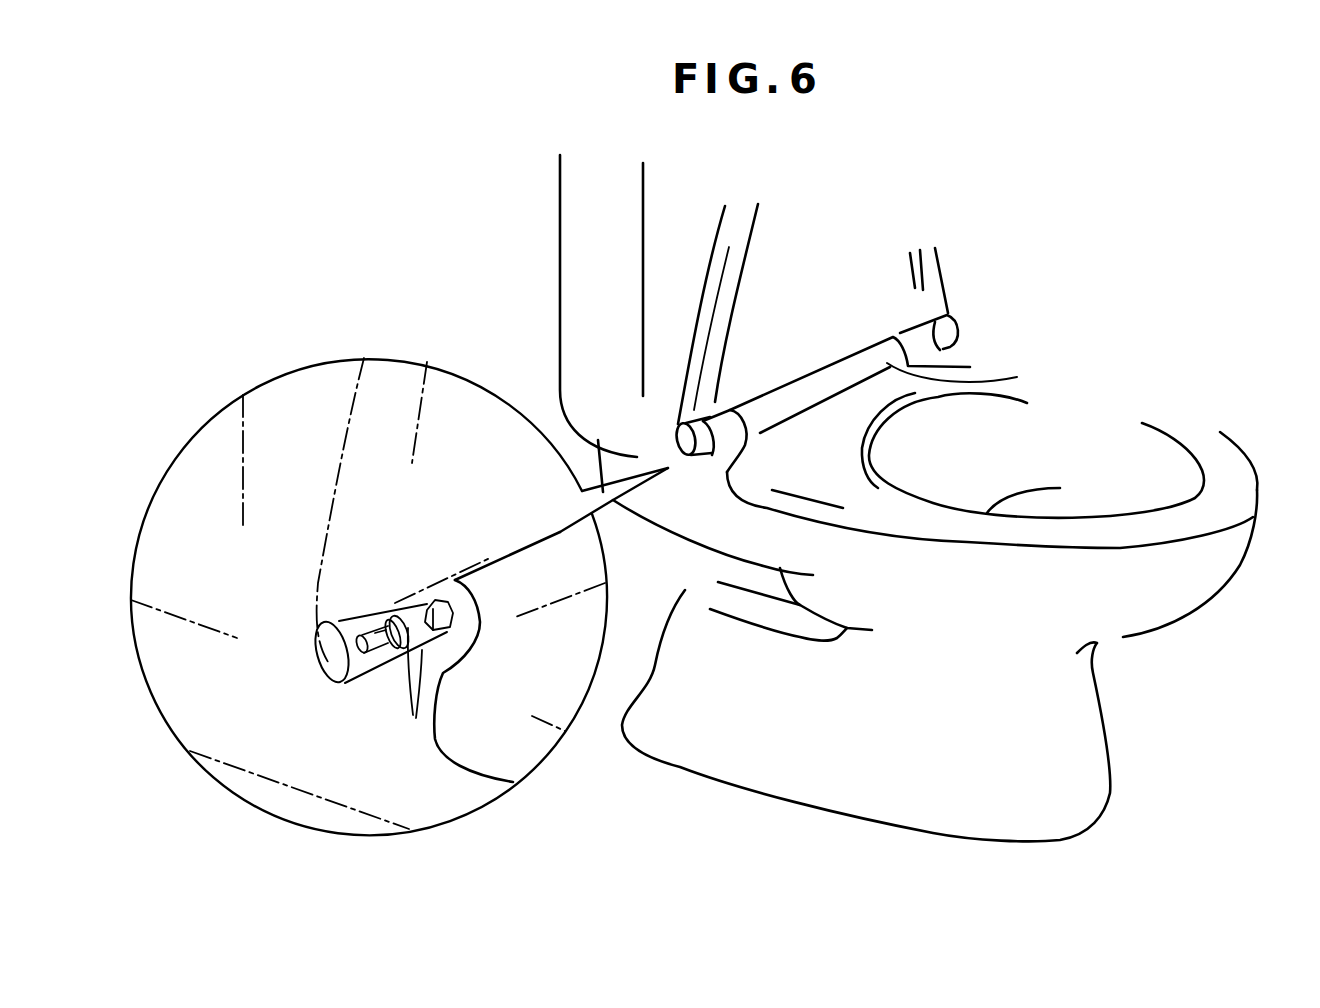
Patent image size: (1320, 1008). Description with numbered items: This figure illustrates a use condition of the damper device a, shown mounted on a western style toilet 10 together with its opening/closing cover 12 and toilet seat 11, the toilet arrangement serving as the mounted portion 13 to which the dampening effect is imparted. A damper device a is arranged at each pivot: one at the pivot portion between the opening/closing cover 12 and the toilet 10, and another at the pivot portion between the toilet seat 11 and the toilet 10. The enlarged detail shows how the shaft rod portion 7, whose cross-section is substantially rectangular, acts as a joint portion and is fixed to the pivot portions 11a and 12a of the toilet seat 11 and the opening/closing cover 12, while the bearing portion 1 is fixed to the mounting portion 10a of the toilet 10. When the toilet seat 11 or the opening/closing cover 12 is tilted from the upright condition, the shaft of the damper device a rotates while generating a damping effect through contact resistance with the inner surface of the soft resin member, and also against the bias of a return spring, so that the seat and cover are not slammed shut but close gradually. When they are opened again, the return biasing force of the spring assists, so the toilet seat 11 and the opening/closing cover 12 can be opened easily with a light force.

The bearing portion 1 is at (395, 620).
The rod portion 7 is at (368, 630).
The toilet 10 is at (1100, 617).
The mounting portion 10a is at (728, 438).
The toilet seat 11 is at (1223, 450).
The pivot portion 11a is at (967, 379).
The opening/closing cover 12 is at (938, 264).
The pivot portion 12a is at (678, 441).
The mounted portion 13 is at (1100, 403).
The damper device a is at (383, 656).